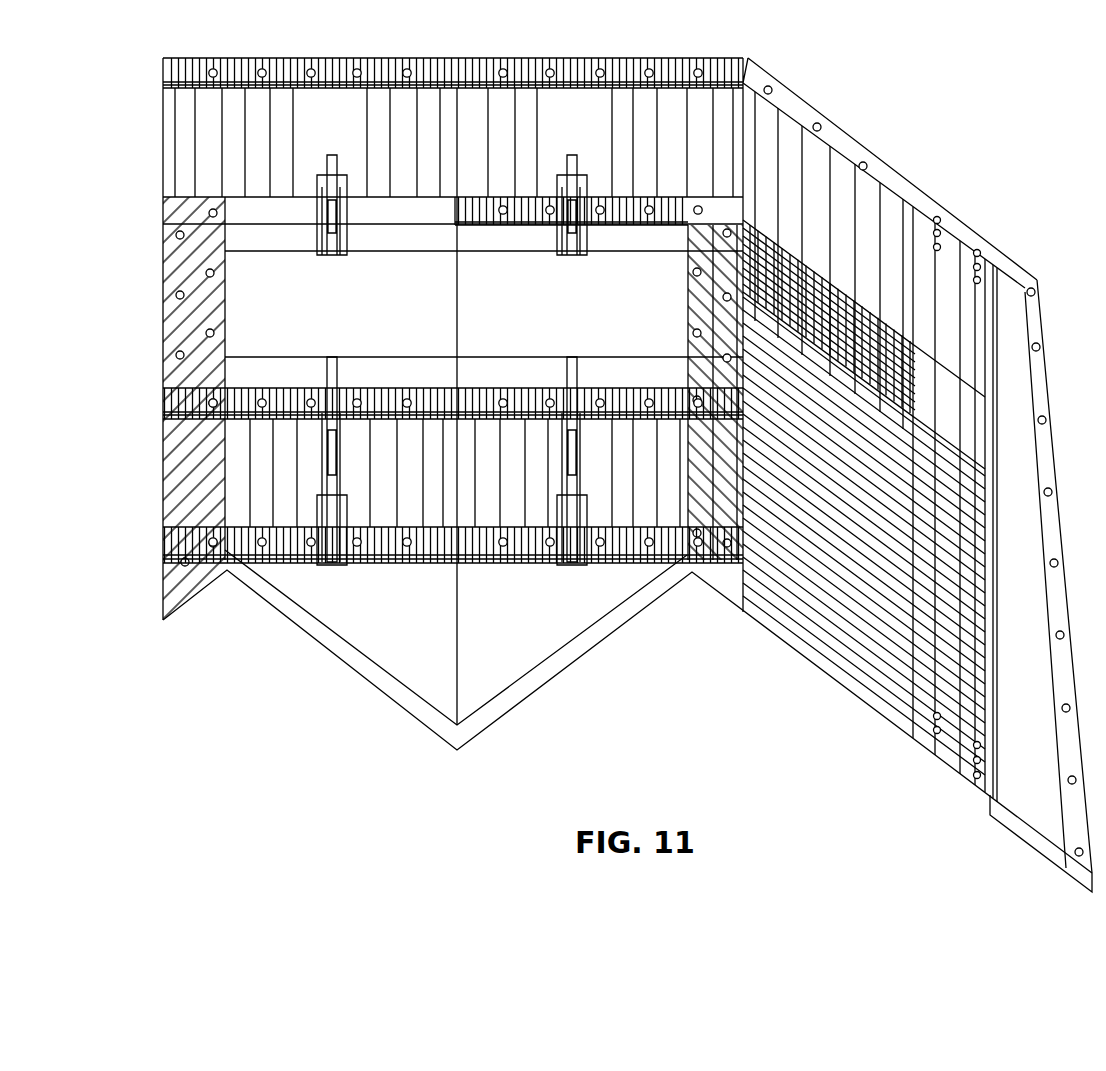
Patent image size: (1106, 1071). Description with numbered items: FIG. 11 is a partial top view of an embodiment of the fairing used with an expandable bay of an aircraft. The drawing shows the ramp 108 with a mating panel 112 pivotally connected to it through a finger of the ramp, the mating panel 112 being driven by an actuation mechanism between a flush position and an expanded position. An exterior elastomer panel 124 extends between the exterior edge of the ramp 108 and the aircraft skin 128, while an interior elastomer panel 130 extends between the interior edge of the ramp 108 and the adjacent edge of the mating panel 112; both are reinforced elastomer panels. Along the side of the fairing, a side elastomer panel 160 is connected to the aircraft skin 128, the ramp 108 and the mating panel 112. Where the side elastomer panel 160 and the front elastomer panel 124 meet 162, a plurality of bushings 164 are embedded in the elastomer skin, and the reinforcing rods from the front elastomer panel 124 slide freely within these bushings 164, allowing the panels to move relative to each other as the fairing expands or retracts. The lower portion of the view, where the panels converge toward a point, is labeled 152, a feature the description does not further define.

The ramp 108 is at (444, 310).
The mating panel 112 is at (441, 638).
The exterior elastomer panel 124 is at (428, 150).
The aircraft skin 128 is at (477, 60).
The interior elastomer panel 130 is at (441, 483).
The bottom keel edge 152 is at (517, 695).
The side elastomer panel 160 is at (853, 540).
The meeting region of side and front elastomer panels 162 is at (892, 347).
The bushings 164 is at (776, 265).